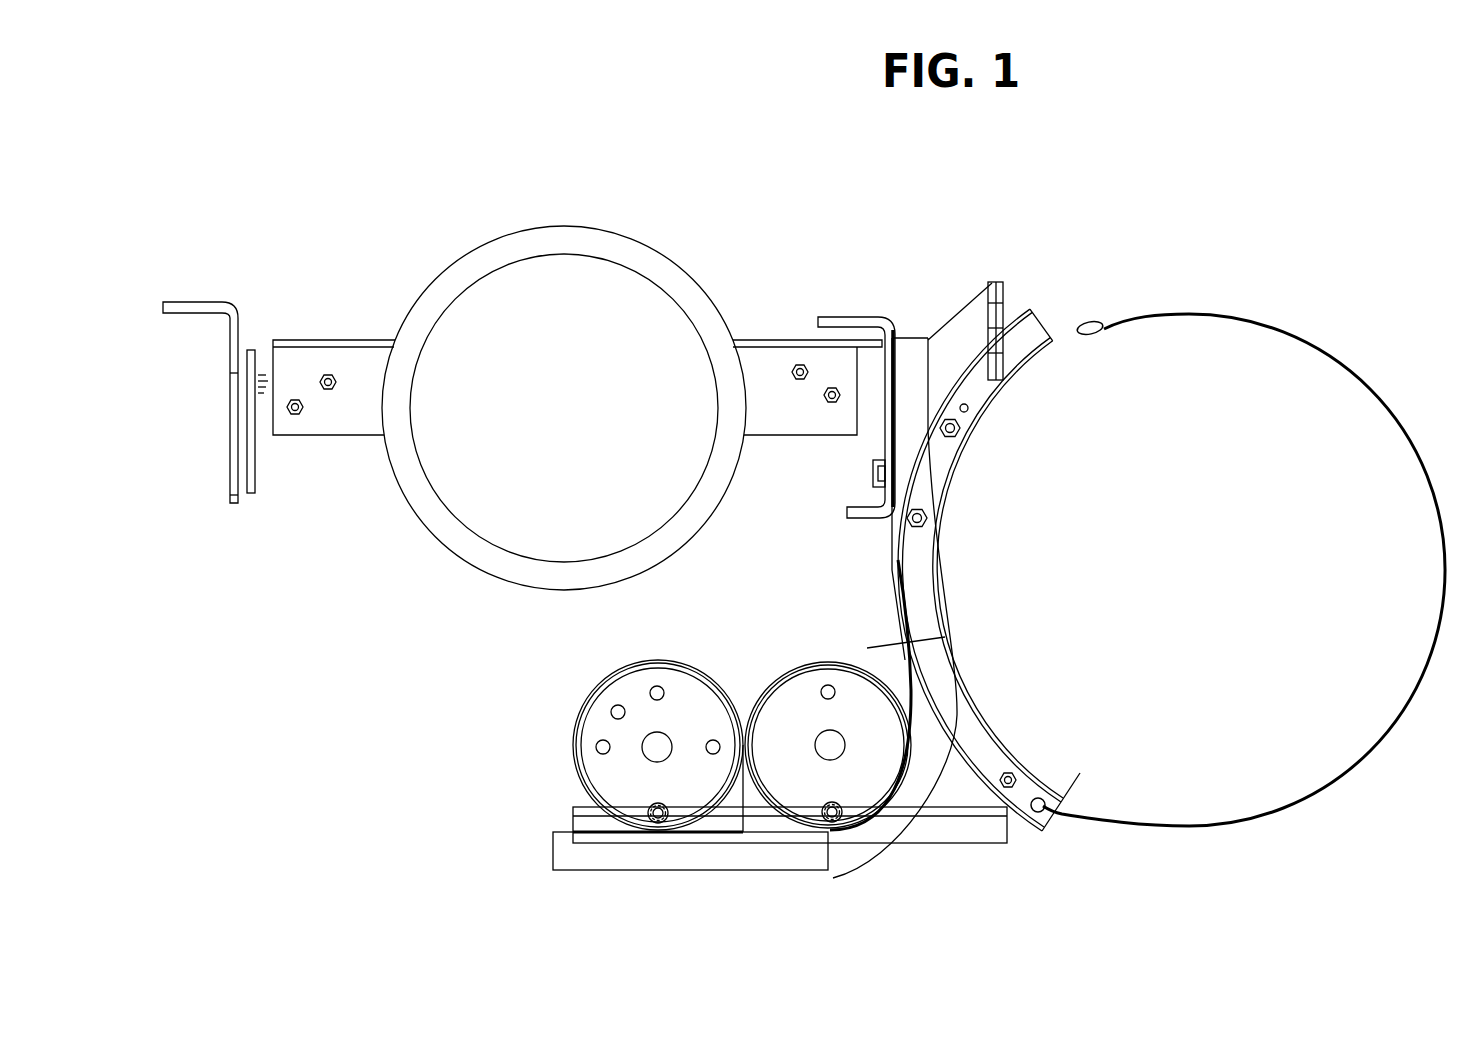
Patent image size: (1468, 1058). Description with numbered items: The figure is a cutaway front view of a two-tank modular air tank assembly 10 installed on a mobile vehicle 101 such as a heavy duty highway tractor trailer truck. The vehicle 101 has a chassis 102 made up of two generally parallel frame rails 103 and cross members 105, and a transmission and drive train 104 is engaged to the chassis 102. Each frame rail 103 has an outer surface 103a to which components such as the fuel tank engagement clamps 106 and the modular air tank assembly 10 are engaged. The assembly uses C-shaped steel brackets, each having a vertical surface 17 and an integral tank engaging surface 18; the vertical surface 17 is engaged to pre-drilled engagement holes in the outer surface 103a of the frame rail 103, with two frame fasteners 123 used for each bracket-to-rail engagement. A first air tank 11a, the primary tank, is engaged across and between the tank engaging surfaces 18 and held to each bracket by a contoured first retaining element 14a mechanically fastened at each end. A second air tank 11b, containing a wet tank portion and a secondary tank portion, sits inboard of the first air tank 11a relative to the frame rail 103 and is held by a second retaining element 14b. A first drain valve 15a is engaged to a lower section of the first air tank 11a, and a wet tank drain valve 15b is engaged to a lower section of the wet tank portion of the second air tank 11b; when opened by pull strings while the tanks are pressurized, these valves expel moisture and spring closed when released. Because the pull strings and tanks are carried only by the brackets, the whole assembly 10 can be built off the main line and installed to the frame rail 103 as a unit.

The mobile vehicle 101 is at (873, 157).
The transmission and drive train 104 is at (590, 224).
The cross members 105 is at (345, 349).
The frame rail 103 is at (197, 304).
The chassis 102 is at (829, 315).
The frame fastener 123 is at (873, 475).
The outer surface 103a is at (992, 281).
The vertical surface 17 is at (907, 433).
The fuel tank engagement clamp 106 is at (1021, 343).
The modular air tank assembly 10 is at (888, 891).
The tank engaging surface 18 is at (732, 849).
The second retaining element 14b is at (584, 700).
The second air tank 11b is at (697, 712).
The first air tank 11a is at (797, 706).
The first retaining element 14a is at (868, 647).
The wet tank drain valve 15b is at (658, 816).
The first drain valve 15a is at (832, 815).